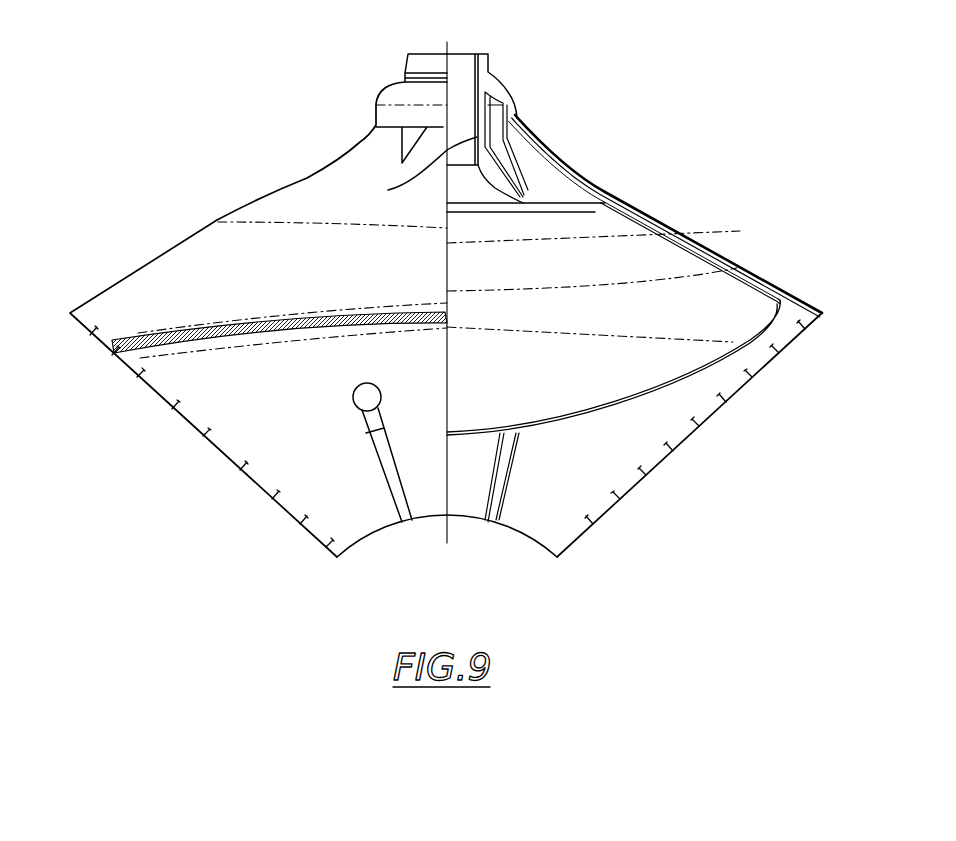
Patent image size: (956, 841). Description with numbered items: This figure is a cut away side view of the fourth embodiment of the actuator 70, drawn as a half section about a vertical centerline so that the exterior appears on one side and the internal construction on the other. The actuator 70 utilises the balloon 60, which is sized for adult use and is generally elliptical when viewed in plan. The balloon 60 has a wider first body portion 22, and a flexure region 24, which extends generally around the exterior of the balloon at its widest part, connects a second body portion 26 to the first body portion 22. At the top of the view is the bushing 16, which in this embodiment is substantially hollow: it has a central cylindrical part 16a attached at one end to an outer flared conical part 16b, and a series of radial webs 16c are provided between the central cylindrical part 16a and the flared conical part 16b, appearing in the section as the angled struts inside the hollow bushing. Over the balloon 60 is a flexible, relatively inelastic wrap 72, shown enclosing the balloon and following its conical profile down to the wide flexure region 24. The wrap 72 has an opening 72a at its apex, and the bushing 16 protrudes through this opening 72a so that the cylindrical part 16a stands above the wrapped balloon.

The bushing 16 is at (378, 83).
The central cylindrical part 16a is at (402, 176).
The outer flared conical part 16b is at (550, 172).
The radial webs 16c is at (495, 175).
The first body portion 22 is at (690, 247).
The flexure region 24 is at (775, 306).
The second body portion 26 is at (579, 412).
The balloon 60 is at (557, 433).
The actuator 70 is at (577, 121).
The wrap 72 is at (168, 262).
The opening 72a is at (375, 127).